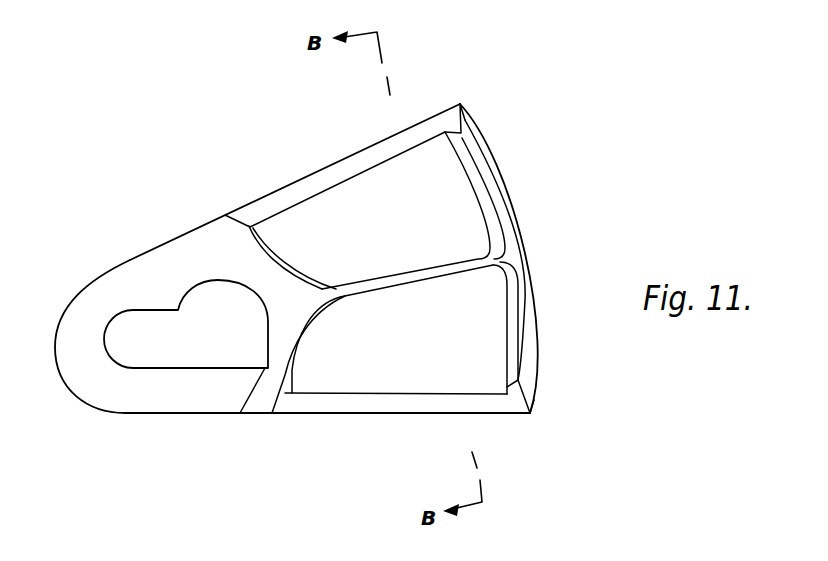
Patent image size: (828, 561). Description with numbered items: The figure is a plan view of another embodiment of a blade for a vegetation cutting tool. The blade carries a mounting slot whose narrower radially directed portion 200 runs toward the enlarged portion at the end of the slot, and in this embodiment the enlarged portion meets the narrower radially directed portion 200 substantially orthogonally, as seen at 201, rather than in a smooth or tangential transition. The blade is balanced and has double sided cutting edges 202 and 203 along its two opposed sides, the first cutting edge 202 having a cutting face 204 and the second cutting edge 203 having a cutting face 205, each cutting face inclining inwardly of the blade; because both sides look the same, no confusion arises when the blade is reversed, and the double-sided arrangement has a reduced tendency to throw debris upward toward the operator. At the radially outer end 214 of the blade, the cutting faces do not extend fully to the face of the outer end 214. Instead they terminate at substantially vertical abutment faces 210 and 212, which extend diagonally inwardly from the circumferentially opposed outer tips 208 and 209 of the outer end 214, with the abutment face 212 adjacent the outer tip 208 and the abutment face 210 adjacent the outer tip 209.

The radially directed portion of the mounting slot 200 is at (137, 308).
The orthogonal transition 201 is at (238, 418).
The double sided cutting edge 202 is at (347, 158).
The double sided cutting edge 203 is at (403, 415).
The cutting face 204 is at (273, 198).
The cutting face 205 is at (330, 403).
The outer tip 208 is at (458, 106).
The outer tip 209 is at (532, 416).
The vertical abutment face 210 is at (530, 394).
The vertical abutment face 212 is at (467, 126).
The outer end 214 is at (524, 257).